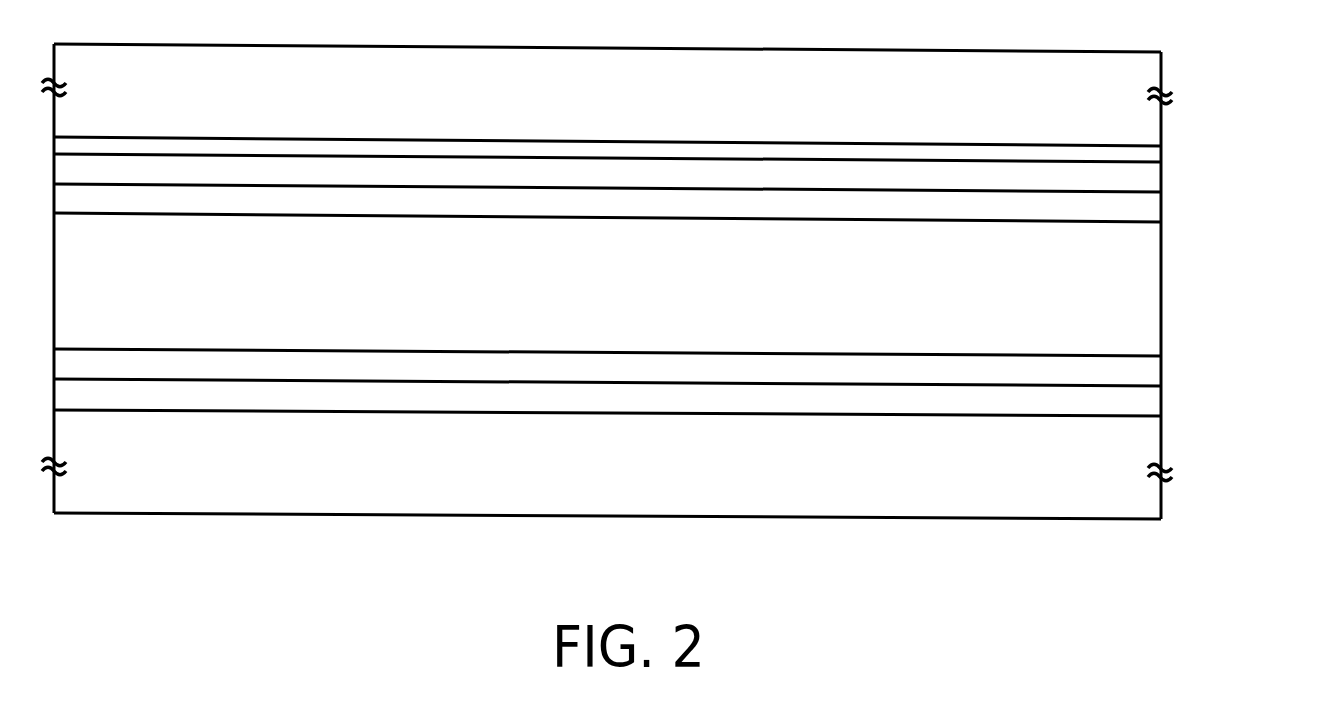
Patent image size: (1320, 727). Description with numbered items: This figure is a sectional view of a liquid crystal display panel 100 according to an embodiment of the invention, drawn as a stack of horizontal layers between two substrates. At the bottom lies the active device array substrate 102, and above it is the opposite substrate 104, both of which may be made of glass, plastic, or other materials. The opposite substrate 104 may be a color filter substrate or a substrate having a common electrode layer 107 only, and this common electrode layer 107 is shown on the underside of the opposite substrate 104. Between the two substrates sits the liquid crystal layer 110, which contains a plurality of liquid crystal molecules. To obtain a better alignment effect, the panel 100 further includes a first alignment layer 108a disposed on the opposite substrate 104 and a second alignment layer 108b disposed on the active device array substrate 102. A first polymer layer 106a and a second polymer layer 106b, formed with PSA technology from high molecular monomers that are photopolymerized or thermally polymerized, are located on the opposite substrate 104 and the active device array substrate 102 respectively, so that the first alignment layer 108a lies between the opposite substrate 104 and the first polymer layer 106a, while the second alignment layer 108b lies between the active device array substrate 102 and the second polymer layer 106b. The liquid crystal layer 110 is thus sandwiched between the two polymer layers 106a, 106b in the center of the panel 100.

The liquid crystal display panel 100 is at (664, 308).
The active device array substrate 102 is at (1147, 445).
The opposite substrate 104 is at (1147, 73).
The first polymer layer 106a is at (1147, 212).
The second polymer layer 106b is at (1147, 373).
The common electrode layer 107 is at (1147, 153).
The first alignment layer 108a is at (1147, 179).
The second alignment layer 108b is at (1147, 403).
The liquid crystal layer 110 is at (1147, 300).